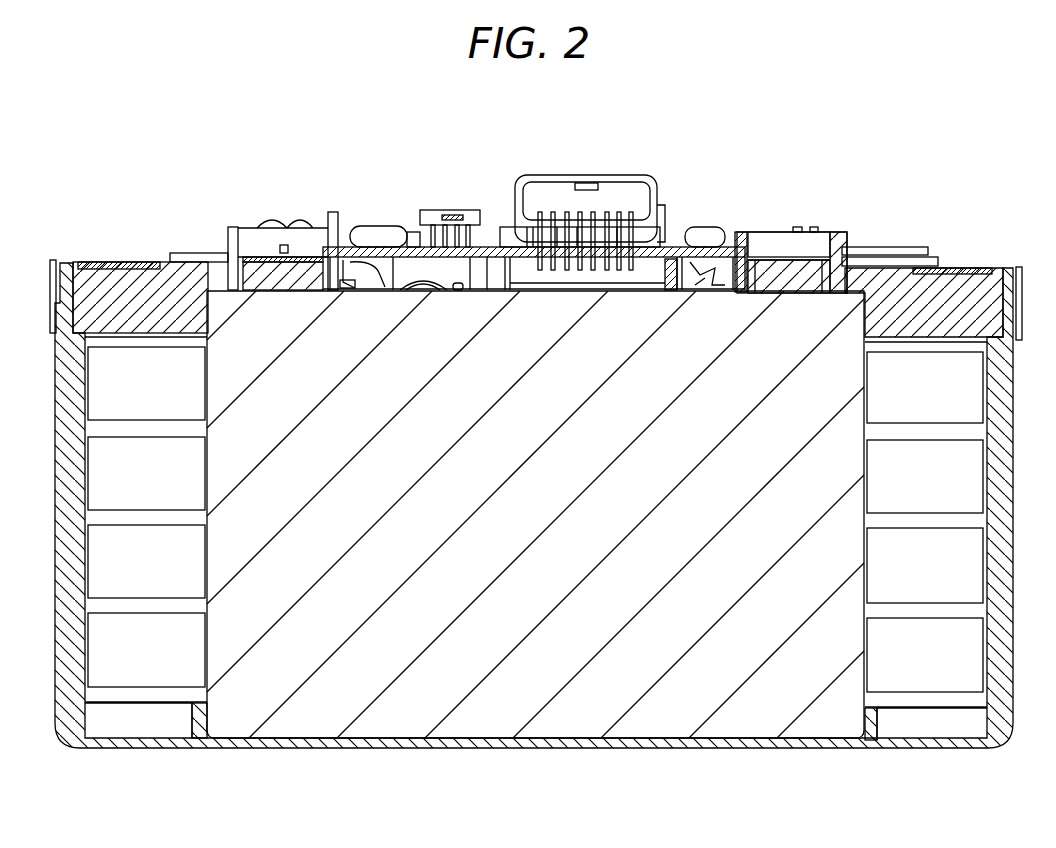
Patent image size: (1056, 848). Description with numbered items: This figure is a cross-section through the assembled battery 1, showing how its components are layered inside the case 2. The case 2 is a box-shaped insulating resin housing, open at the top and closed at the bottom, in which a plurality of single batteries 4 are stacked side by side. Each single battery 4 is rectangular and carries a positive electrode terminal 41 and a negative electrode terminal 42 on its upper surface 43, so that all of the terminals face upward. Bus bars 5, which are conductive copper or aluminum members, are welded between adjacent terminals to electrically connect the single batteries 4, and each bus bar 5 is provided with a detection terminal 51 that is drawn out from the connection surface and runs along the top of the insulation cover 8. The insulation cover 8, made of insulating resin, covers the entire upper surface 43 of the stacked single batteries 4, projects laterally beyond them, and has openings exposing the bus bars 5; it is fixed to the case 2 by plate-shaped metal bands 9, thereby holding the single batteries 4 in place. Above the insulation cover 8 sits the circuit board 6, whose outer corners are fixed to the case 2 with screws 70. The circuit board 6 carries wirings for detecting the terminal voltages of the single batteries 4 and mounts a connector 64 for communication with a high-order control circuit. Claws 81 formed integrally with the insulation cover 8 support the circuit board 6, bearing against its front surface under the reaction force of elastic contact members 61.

The assembled battery 1 is at (944, 139).
The case 2 is at (835, 750).
The single battery 4 is at (470, 660).
The bus bar 5 is at (302, 252).
The circuit board 6 is at (486, 250).
The insulation cover 8 is at (898, 296).
The metal band 9 is at (115, 262).
The positive electrode terminal 41 is at (818, 268).
The negative electrode terminal 42 is at (258, 257).
The upper surface 43 is at (452, 212).
The detection terminal 51 is at (347, 294).
The elastic contact member 61 is at (383, 285).
The connector 64 is at (540, 178).
The screw 70 is at (355, 228).
The claw 81 is at (347, 243).